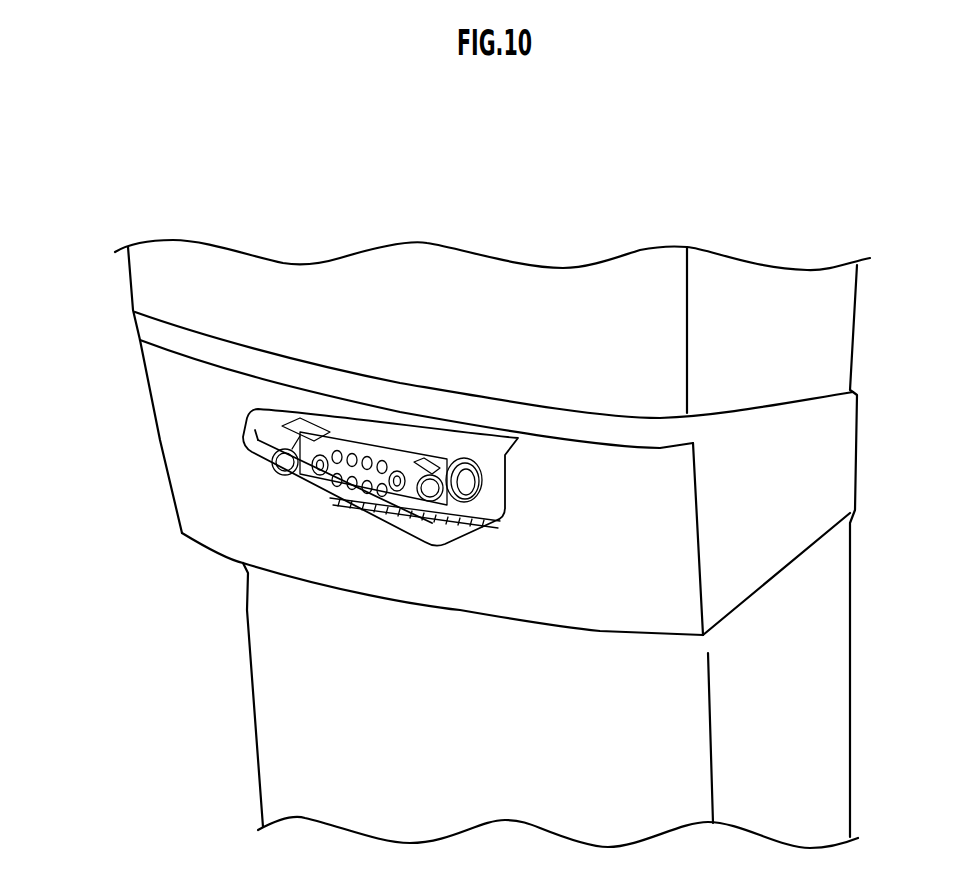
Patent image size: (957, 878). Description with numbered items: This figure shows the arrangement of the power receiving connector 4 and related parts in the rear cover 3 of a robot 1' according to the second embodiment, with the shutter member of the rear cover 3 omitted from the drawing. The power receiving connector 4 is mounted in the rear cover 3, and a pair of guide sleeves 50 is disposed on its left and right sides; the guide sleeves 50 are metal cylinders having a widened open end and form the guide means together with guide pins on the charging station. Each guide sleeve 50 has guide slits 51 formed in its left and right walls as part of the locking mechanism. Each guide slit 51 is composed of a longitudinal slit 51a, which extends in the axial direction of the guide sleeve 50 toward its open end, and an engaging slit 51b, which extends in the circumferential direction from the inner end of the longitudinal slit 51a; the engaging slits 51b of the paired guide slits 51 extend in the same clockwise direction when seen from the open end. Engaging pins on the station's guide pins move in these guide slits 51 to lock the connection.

The robot 1' is at (460, 514).
The rear cover 3 is at (138, 347).
The power receiving connector 4 is at (320, 407).
The guide sleeve 50 is at (445, 455).
The guide slit 51 is at (445, 484).
The longitudinal slit 51a is at (484, 469).
The engaging slit 51b is at (492, 517).